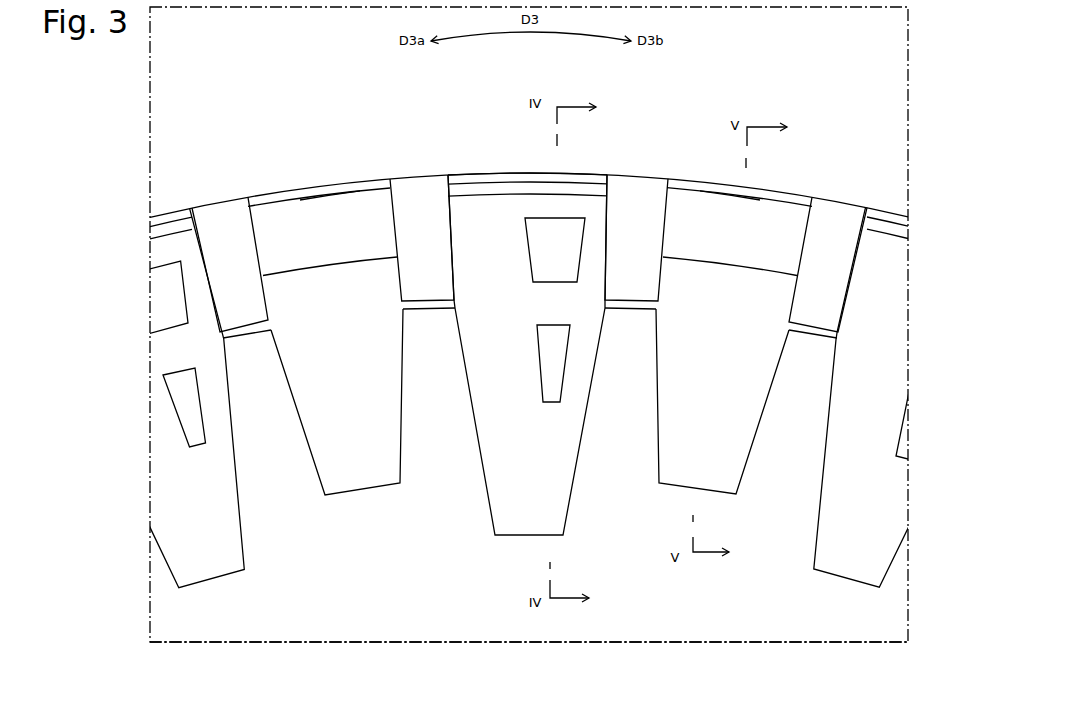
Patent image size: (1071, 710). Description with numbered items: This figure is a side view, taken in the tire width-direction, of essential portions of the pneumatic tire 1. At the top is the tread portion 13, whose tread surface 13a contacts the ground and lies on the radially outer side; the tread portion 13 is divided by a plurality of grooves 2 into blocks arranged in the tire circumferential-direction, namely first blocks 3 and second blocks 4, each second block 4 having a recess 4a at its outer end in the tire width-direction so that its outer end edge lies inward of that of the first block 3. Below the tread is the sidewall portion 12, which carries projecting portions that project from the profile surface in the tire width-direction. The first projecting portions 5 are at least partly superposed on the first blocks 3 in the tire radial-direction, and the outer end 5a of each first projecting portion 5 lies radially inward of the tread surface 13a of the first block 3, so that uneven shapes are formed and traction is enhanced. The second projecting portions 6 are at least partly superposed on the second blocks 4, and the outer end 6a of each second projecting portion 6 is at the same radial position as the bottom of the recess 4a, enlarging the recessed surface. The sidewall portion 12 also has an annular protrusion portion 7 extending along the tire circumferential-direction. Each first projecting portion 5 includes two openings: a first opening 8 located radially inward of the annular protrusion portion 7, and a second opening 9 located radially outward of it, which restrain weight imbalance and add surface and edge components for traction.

The pneumatic tire 1 is at (886, 30).
The groove 2 is at (222, 204).
The first block 3 is at (503, 170).
The second block 4 is at (315, 185).
The recess 4a is at (340, 216).
The first projecting portion 5 is at (488, 500).
The outer end of the first projecting portion 5a is at (558, 196).
The second projecting portion 6 is at (311, 472).
The outer end of the second projecting portion 6a is at (322, 266).
The annular protrusion portion 7 is at (810, 339).
The first opening 8 is at (539, 382).
The second opening 9 is at (527, 254).
The sidewall portion 12 is at (891, 613).
The tread portion 13 is at (204, 161).
The tread surface 13a is at (186, 207).